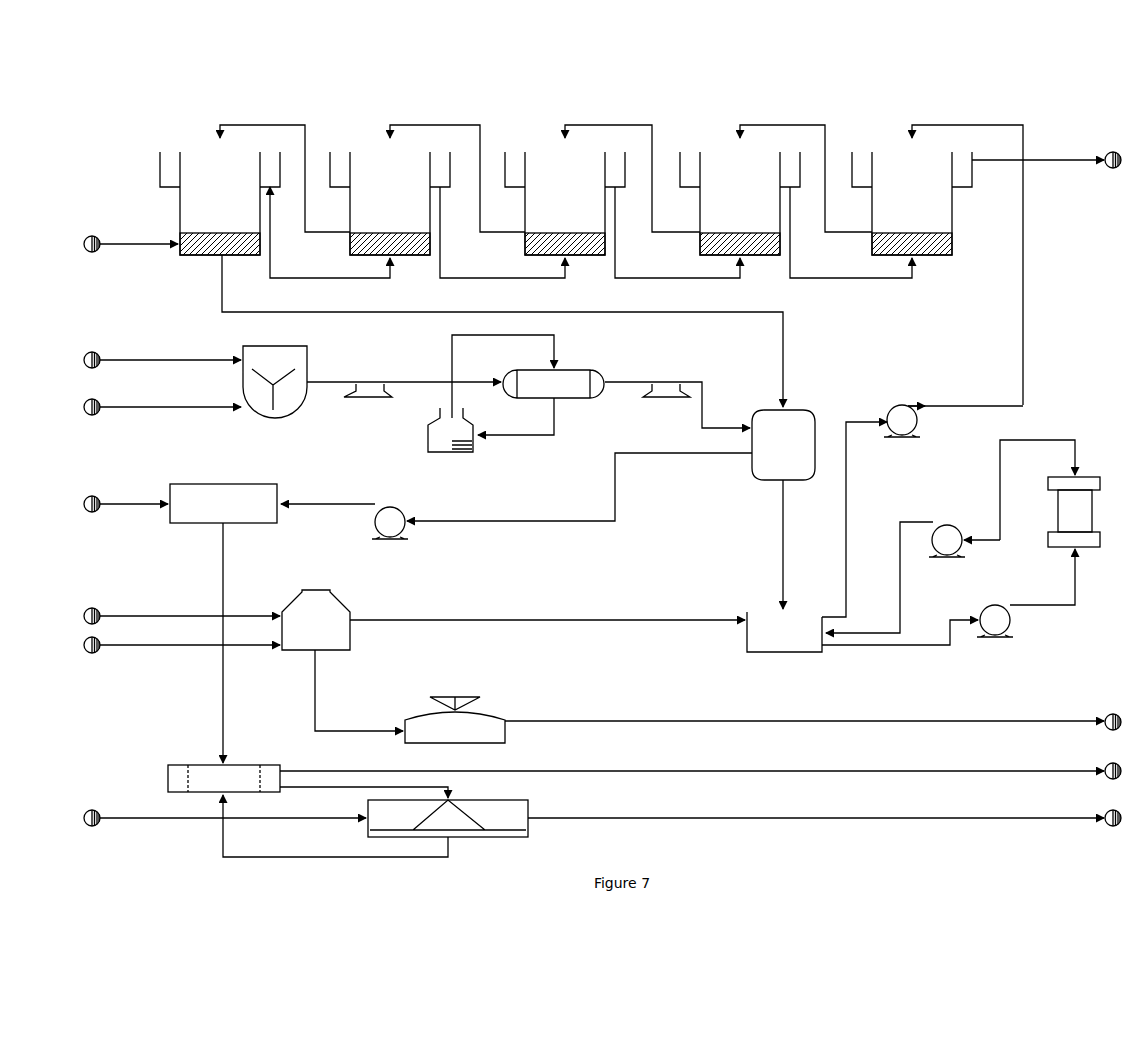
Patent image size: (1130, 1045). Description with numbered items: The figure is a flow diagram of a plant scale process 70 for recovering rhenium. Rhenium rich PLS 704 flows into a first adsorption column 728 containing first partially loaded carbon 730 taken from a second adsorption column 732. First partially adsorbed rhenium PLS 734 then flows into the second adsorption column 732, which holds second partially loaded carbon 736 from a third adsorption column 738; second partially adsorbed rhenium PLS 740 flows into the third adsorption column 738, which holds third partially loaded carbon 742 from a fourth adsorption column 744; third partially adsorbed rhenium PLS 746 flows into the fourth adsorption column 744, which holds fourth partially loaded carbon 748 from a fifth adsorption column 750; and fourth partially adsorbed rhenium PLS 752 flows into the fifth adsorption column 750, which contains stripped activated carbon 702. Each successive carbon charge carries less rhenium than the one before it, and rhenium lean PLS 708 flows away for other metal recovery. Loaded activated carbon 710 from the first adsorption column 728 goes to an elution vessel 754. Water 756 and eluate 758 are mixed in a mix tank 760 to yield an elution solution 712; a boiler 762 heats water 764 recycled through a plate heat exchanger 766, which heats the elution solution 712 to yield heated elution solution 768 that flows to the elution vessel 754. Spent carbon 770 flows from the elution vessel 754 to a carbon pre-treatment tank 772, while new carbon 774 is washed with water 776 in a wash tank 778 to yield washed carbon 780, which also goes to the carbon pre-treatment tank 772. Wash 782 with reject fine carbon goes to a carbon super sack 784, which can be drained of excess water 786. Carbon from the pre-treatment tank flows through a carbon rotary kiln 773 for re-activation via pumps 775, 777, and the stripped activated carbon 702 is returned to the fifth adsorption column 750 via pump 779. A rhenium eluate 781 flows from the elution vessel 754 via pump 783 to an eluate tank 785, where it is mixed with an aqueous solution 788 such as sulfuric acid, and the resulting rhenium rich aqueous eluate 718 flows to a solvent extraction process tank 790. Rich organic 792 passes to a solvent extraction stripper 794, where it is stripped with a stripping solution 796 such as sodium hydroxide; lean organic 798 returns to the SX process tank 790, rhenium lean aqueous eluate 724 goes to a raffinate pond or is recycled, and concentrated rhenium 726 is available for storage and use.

The plant scale process 70 is at (118, 128).
The stripped activated carbon 702 is at (922, 361).
The rhenium rich PLS 704 is at (131, 239).
The rhenium lean PLS 708 is at (1046, 167).
The loaded activated carbon 710 is at (502, 331).
The elution solution 712 is at (404, 379).
The rhenium rich aqueous eluate 718 is at (238, 643).
The rhenium lean aqueous eluate 724 is at (700, 766).
The concentrated rhenium 726 is at (824, 812).
The first adsorption column 728 is at (220, 203).
The first partially loaded carbon 730 is at (285, 170).
The second adsorption column 732 is at (390, 203).
The first partially adsorbed rhenium PLS 734 is at (330, 232).
The second partially loaded carbon 736 is at (457, 170).
The third adsorption column 738 is at (565, 203).
The second partially adsorbed rhenium PLS 740 is at (502, 232).
The third partially loaded carbon 742 is at (632, 170).
The fourth adsorption column 744 is at (740, 203).
The third partially adsorbed rhenium PLS 746 is at (677, 232).
The fourth partially loaded carbon 748 is at (806, 169).
The fifth adsorption column 750 is at (912, 203).
The fourth partially adsorbed rhenium PLS 752 is at (851, 232).
The elution vessel 754 is at (783, 445).
The water 756 is at (162, 355).
The eluate 758 is at (162, 401).
The mix tank 760 is at (275, 382).
The boiler 762 is at (450, 430).
The water 764 is at (503, 377).
The plate heat exchanger 766 is at (553, 384).
The heated elution solution 768 is at (677, 394).
The spent carbon 770 is at (770, 544).
The carbon pre-treatment tank 772 is at (784, 632).
The carbon rotary kiln 773 is at (1074, 512).
The new carbon 774 is at (182, 610).
The pump 775 is at (948, 603).
The water 776 is at (182, 639).
The pump 777 is at (950, 536).
The wash tank 778 is at (316, 620).
The pump 779 is at (953, 431).
The washed carbon 780 is at (547, 609).
The rhenium eluate 781 is at (516, 487).
The wash 782 is at (359, 690).
The pump 783 is at (390, 532).
The carbon super sack 784 is at (455, 720).
The eluate tank 785 is at (223, 503).
The excess water 786 is at (813, 716).
The aqueous solution 788 is at (126, 498).
The solvent extraction (SX) process tank 790 is at (224, 778).
The rich organic 792 is at (364, 783).
The solvent extraction stripper 794 is at (448, 818).
The stripping solution 796 is at (225, 813).
The lean organic 798 is at (335, 826).